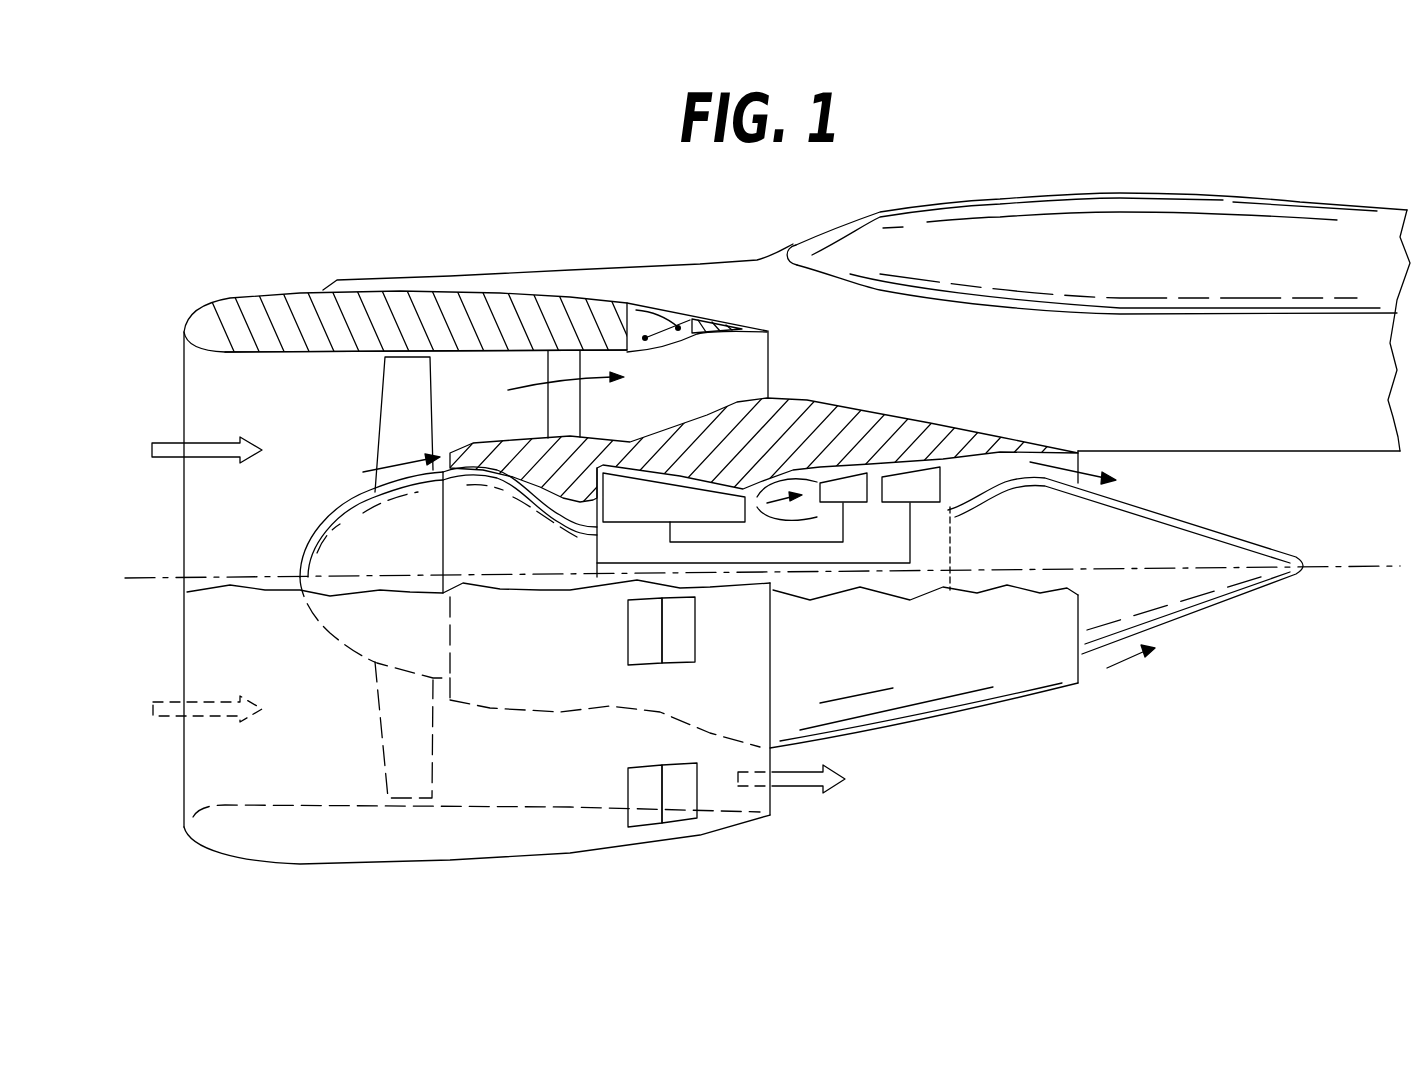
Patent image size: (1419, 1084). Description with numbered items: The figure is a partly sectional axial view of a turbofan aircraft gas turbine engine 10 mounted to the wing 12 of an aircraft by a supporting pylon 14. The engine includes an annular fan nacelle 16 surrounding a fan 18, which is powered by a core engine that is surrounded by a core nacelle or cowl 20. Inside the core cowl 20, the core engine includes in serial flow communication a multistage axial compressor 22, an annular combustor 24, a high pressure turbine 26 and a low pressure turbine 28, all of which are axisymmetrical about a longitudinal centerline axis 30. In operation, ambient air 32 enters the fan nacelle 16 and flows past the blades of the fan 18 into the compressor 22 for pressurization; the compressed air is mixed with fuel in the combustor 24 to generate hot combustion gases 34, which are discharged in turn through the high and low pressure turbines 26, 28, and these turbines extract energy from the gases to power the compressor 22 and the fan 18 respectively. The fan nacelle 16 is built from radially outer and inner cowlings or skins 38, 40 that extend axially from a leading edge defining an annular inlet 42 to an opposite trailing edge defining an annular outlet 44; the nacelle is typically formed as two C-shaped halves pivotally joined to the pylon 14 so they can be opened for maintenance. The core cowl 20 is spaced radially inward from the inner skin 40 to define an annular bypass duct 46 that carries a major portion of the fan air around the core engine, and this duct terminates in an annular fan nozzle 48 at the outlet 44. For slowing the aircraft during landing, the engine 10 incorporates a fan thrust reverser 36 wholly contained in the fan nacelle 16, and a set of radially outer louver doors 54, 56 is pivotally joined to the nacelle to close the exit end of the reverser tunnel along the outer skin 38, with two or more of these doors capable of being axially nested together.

The turbofan aircraft gas turbine engine 10 is at (278, 262).
The wing 12 is at (1015, 194).
The supporting pylon 14 is at (1241, 400).
The fan nacelle 16 is at (276, 866).
The fan 18 is at (378, 410).
The core nacelle or cowl 20 is at (984, 436).
The multistage axial compressor 22 is at (622, 505).
The annular combustor 24 is at (790, 517).
The high pressure turbine 26 is at (857, 503).
The low pressure turbine 28 is at (932, 503).
The longitudinal or axial centerline axis 30 is at (1329, 563).
The ambient air 32 is at (168, 462).
The hot combustion gases 34 is at (1106, 672).
The fan thrust reverser 36 is at (666, 287).
The outer cowling or skin 38 is at (440, 293).
The inner cowling or skin 40 is at (501, 352).
The annular inlet 42 is at (183, 392).
The annular outlet 44 is at (770, 364).
The annular bypass duct 46 is at (522, 430).
The annular fan nozzle 48 is at (753, 381).
The outer louver door 54 is at (643, 815).
The outer louver door 56 is at (670, 815).